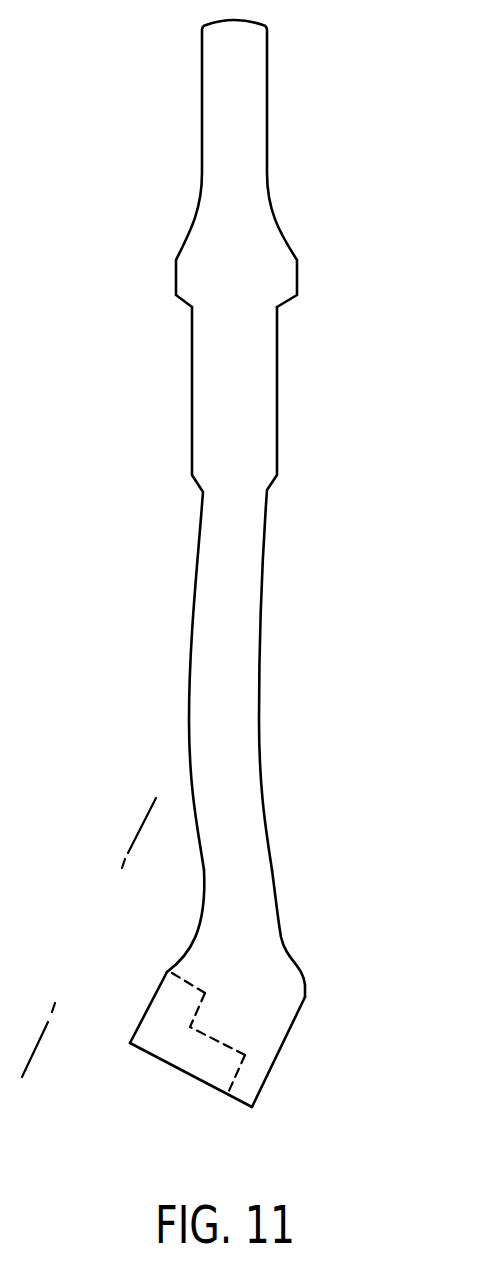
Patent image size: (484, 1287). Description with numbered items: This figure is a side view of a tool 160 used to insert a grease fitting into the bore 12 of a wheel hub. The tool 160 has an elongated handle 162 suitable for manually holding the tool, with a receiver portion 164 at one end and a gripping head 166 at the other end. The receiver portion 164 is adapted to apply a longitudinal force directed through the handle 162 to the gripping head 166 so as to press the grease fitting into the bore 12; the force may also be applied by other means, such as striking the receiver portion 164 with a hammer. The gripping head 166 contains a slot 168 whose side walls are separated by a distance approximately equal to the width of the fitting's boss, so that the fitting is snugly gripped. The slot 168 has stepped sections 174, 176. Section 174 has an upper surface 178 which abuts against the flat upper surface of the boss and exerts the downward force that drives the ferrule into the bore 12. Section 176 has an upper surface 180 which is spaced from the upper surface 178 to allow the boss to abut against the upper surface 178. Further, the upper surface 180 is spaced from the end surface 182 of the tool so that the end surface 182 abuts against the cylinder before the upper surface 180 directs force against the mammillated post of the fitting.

The tool 160 is at (235, 591).
The elongated handle 162 is at (192, 383).
The receiver portion 164 is at (268, 80).
The gripping head 166 is at (223, 1016).
The slot 168 is at (220, 989).
The stepped section 174 is at (208, 1073).
The stepped section 176 is at (148, 1027).
The upper surface 178 is at (228, 1046).
The upper surface 180 is at (183, 979).
The end surface 182 is at (237, 1100).
The bore 12 is at (156, 798).